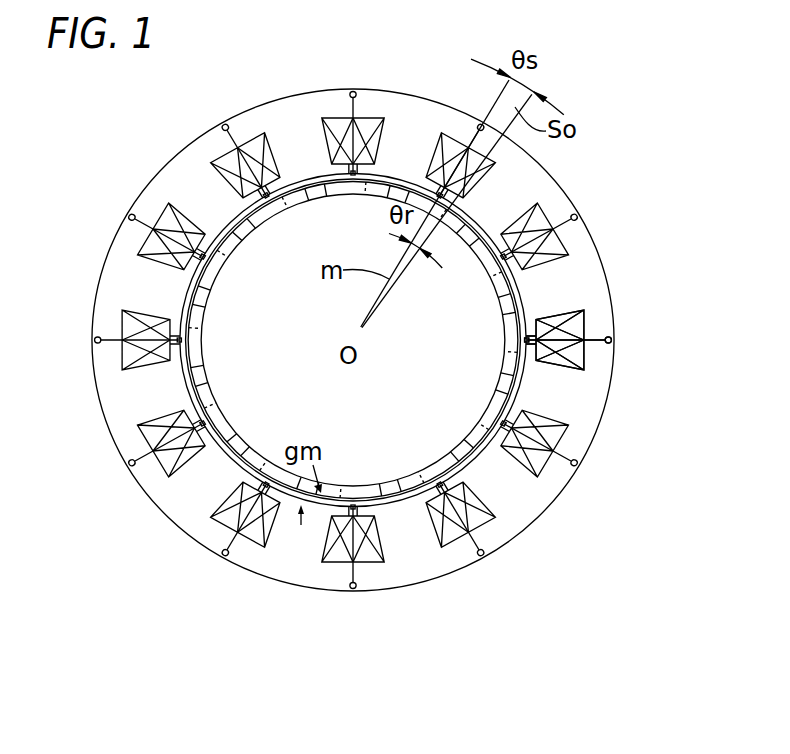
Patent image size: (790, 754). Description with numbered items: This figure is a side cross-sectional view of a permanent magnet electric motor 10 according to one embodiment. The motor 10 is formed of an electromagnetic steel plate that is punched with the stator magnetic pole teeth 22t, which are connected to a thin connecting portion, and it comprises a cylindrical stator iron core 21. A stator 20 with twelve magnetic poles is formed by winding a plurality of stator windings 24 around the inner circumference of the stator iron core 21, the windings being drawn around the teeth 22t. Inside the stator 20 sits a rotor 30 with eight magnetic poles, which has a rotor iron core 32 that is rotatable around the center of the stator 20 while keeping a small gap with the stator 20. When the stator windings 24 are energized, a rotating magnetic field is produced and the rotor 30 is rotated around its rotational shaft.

The permanent magnet electric motor 10 is at (627, 122).
The stator 20 is at (353, 340).
The stator iron core 21 is at (353, 340).
The stator magnetic pole teeth 22t is at (353, 340).
The stator windings 24 is at (568, 340).
The rotor 30 is at (352, 340).
The rotor iron core 32 is at (353, 340).